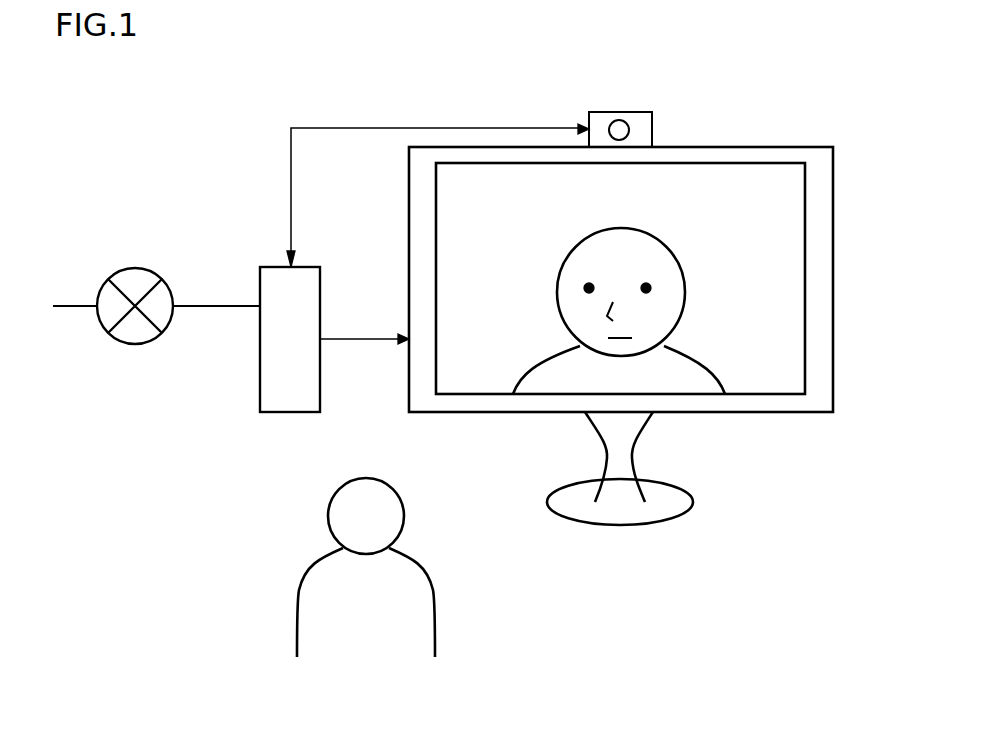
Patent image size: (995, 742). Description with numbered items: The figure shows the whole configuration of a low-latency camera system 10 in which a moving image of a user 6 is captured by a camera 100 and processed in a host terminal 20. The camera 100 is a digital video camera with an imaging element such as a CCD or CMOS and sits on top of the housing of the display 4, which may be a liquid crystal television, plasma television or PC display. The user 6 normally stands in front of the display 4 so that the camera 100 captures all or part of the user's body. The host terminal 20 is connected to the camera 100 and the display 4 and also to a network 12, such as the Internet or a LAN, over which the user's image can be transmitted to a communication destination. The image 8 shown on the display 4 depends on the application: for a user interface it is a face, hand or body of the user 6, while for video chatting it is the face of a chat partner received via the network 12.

The display 4 is at (740, 147).
The user 6 is at (366, 478).
The image 8 is at (620, 228).
The low-latency camera system 10 is at (457, 727).
The network 12 is at (135, 268).
The host terminal 20 is at (305, 267).
The camera 100 is at (623, 112).